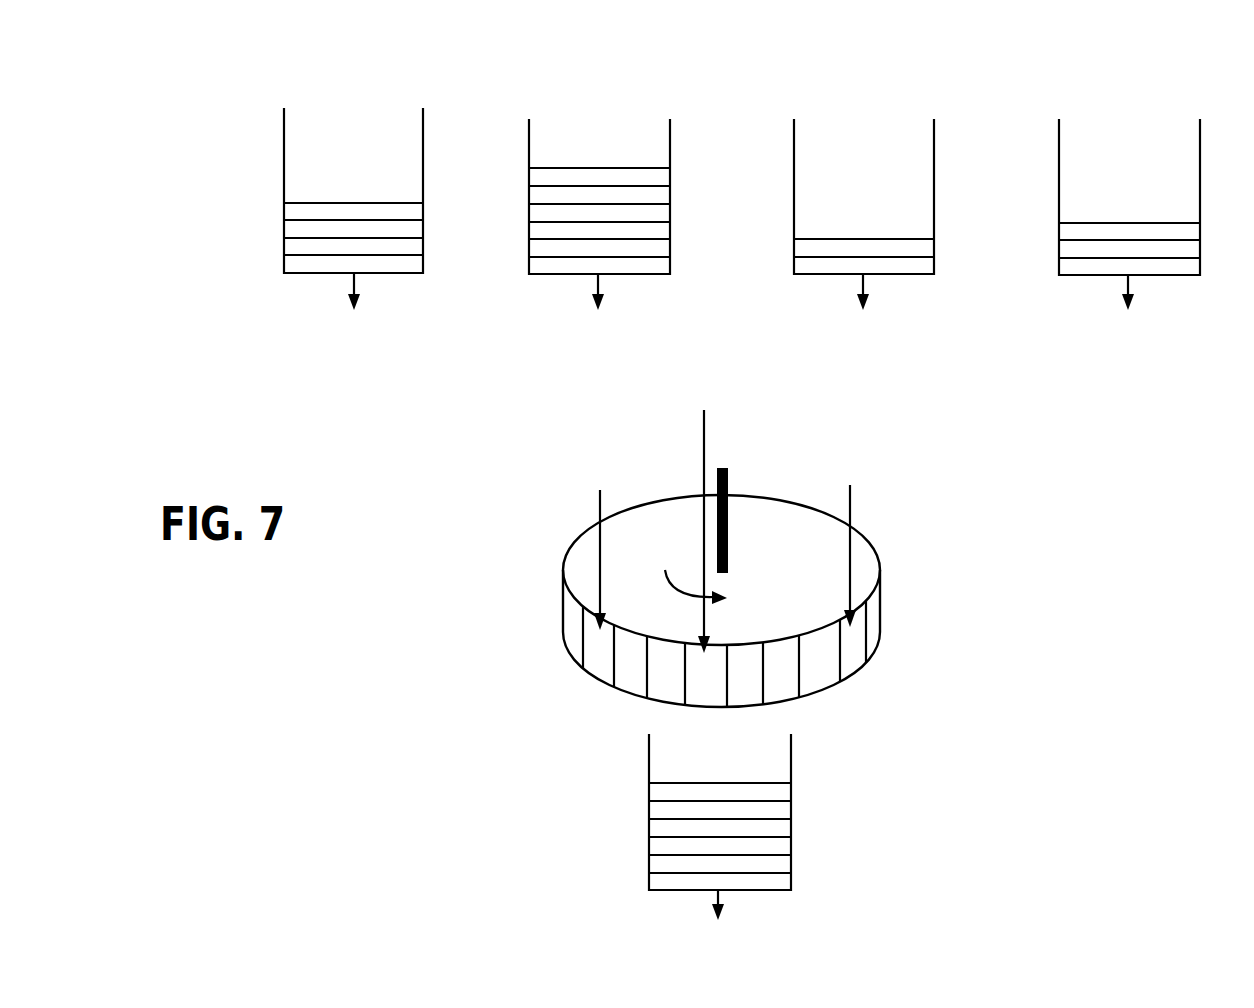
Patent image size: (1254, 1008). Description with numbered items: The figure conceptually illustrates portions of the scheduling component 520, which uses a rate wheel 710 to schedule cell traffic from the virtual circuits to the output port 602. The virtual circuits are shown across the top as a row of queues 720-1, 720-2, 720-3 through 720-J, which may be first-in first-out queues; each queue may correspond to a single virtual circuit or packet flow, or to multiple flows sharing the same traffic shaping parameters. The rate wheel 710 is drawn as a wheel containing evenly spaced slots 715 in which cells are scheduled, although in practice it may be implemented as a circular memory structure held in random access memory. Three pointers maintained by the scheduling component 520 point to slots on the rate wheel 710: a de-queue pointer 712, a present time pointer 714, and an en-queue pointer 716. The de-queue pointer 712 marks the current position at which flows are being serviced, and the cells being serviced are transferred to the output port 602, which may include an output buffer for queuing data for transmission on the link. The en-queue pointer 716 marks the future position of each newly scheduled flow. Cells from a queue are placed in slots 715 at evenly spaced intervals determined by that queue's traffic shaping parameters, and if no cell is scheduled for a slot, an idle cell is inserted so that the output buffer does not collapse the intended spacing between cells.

The scheduling component 520 is at (178, 90).
The queue 720-1 is at (437, 102).
The queue 720-2 is at (684, 113).
The queue 720-3 is at (948, 113).
The queue 720-J is at (1214, 113).
The rate wheel 710 is at (887, 605).
The slots 715 is at (595, 687).
The de-queue pointer 712 is at (605, 531).
The present time pointer 714 is at (709, 505).
The en-queue pointer 716 is at (854, 529).
The output port 602 is at (791, 819).